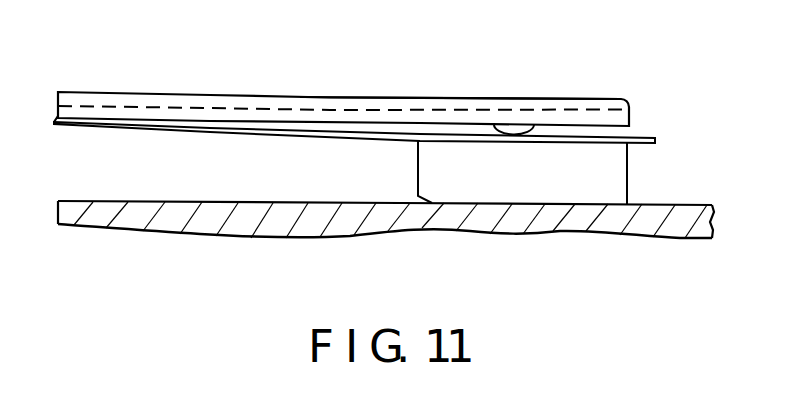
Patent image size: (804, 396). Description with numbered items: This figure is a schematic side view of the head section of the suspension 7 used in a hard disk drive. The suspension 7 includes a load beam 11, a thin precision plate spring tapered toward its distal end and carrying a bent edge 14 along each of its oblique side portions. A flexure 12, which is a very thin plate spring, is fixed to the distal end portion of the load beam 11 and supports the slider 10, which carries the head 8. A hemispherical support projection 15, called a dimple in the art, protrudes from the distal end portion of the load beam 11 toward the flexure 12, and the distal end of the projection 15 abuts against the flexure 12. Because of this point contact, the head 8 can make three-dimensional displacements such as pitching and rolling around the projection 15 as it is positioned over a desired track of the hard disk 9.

The suspension 7 is at (176, 80).
The head 8 is at (404, 167).
The hard disk 9 is at (168, 202).
The slider 10 is at (620, 186).
The load beam 11 is at (270, 117).
The flexure 12 is at (628, 135).
The bent edge 14 is at (383, 97).
The support projection 15 is at (498, 129).